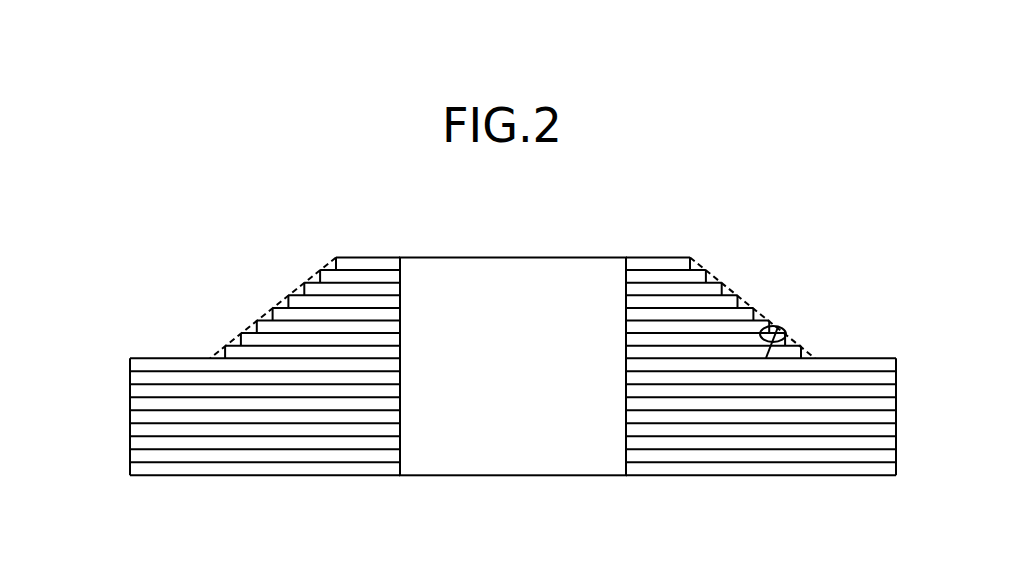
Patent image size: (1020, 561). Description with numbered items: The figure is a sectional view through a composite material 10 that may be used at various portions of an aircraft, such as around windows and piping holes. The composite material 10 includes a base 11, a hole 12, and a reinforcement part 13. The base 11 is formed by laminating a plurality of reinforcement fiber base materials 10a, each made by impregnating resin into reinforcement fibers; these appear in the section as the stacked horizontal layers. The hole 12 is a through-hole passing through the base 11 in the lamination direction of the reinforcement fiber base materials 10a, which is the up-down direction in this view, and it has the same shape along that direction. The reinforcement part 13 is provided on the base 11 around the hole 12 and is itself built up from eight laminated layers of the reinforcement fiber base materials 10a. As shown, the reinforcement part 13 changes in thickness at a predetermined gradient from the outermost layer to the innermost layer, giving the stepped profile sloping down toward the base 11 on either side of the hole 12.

The composite material 10 is at (821, 258).
The reinforcement fiber base material 10a is at (304, 289).
The base 11 is at (896, 389).
The hole 12 is at (626, 274).
The reinforcement part 13 is at (668, 277).